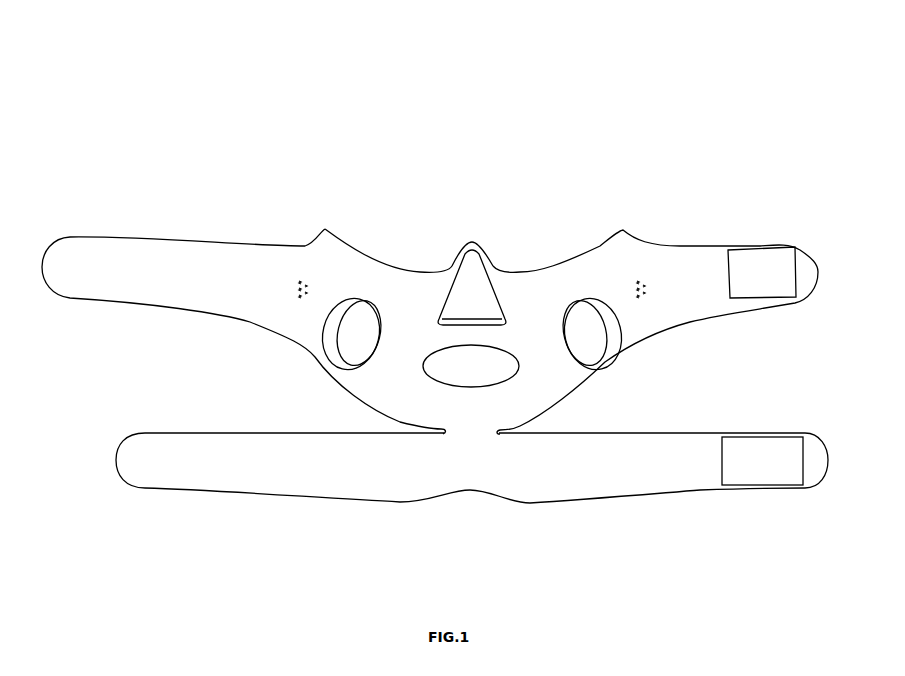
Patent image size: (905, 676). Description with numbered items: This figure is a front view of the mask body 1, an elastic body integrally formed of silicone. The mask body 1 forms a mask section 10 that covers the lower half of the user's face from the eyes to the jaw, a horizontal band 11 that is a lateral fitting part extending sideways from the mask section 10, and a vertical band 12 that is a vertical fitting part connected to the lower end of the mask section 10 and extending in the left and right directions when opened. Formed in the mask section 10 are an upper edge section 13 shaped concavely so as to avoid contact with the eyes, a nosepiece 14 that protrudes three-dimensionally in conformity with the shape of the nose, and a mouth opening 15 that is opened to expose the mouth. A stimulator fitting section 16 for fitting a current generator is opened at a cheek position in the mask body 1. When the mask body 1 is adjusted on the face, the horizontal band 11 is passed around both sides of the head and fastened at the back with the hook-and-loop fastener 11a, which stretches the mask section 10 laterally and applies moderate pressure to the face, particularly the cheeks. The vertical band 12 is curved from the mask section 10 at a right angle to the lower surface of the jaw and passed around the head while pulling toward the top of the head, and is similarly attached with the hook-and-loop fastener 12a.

The mask body 1 is at (750, 105).
The mask section 10 is at (553, 268).
The horizontal band 11 is at (195, 246).
The hook-and-loop fastener 11a is at (755, 256).
The vertical band 12 is at (220, 490).
The hook-and-loop fastener 12a is at (768, 447).
The upper edge section 13 is at (420, 268).
The nosepiece 14 is at (493, 280).
The mouth opening 15 is at (520, 369).
The stimulator fitting section 16 is at (349, 332).